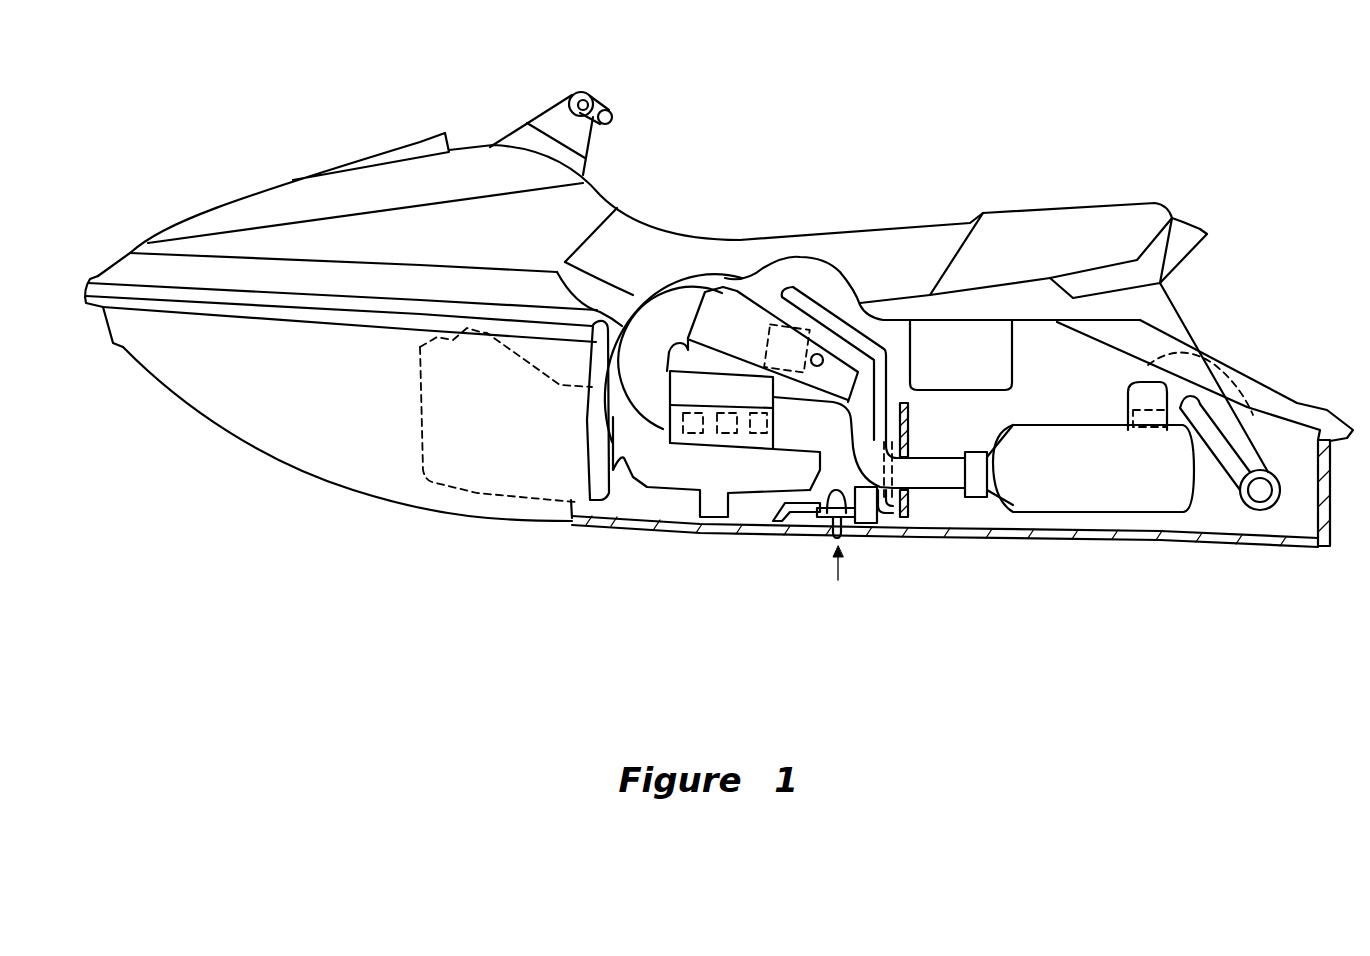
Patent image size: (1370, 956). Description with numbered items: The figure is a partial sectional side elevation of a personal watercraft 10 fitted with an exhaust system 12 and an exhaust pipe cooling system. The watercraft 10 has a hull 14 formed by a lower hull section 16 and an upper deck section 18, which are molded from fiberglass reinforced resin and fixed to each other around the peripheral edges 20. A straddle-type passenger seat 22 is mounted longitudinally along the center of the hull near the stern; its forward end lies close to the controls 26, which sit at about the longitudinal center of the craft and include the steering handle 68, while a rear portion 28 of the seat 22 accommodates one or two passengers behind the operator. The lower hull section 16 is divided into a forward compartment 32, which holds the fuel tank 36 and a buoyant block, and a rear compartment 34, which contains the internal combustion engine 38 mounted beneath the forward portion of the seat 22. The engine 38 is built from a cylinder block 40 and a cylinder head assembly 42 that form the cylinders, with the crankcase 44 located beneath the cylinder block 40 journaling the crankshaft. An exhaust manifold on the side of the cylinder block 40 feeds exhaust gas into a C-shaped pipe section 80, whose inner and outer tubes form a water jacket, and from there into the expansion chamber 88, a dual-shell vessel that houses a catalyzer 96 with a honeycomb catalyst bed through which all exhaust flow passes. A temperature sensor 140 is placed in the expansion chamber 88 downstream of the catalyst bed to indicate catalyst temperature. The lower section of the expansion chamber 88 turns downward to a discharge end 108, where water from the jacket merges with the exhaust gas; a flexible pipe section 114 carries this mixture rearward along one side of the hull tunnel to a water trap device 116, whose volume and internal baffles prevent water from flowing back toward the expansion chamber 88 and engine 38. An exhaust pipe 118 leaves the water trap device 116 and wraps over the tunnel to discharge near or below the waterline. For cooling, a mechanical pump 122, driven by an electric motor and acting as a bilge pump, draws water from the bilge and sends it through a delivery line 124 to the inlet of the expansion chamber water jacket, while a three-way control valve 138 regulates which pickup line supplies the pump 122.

The personal watercraft 10 is at (762, 82).
The exhaust system 12 is at (685, 262).
The hull 14 is at (162, 187).
The lower hull section 16 is at (233, 440).
The upper deck section 18 is at (243, 200).
The peripheral edges 20 is at (96, 300).
The passenger seat 22 is at (938, 236).
The controls 26 is at (598, 82).
The rear portion of the seat 28 is at (1043, 212).
The forward compartment 32 is at (375, 462).
The rear compartment 34 is at (835, 277).
The fuel tank 36 is at (590, 490).
The internal combustion engine 38 is at (670, 520).
The cylinder block 40 is at (690, 440).
The cylinder head assembly 42 is at (755, 387).
The crankcase 44 is at (745, 500).
The steering handle 68 is at (610, 118).
The C-shaped pipe section 80 is at (605, 283).
The expansion chamber 88 is at (755, 295).
The catalyzer 96 is at (813, 327).
The discharge end 108 is at (665, 400).
The flexible pipe section 114 is at (937, 497).
The water trap device 116 is at (1073, 508).
The exhaust pipe 118 is at (1261, 468).
The mechanical pump 122 is at (868, 513).
The delivery line 124 is at (825, 360).
The control valve 138 is at (833, 500).
The temperature sensor 140 is at (1027, 249).